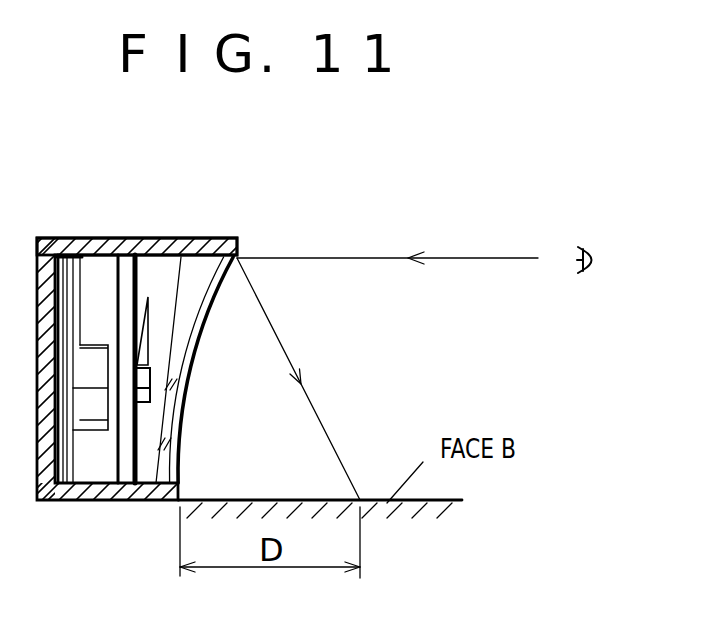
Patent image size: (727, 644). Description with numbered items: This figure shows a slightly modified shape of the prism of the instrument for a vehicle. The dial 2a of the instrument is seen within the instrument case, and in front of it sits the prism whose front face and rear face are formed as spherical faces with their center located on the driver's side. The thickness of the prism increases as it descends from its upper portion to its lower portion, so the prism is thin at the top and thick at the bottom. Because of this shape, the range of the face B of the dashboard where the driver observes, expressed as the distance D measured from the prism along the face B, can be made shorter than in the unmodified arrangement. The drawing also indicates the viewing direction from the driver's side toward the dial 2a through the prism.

The dial 2a is at (176, 253).